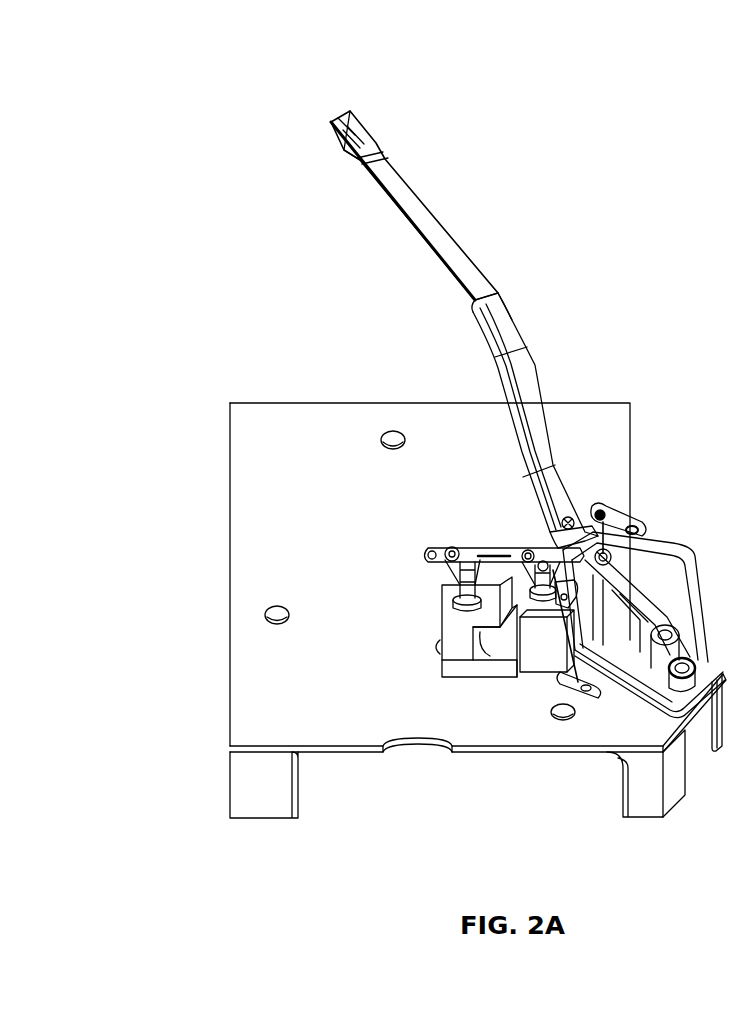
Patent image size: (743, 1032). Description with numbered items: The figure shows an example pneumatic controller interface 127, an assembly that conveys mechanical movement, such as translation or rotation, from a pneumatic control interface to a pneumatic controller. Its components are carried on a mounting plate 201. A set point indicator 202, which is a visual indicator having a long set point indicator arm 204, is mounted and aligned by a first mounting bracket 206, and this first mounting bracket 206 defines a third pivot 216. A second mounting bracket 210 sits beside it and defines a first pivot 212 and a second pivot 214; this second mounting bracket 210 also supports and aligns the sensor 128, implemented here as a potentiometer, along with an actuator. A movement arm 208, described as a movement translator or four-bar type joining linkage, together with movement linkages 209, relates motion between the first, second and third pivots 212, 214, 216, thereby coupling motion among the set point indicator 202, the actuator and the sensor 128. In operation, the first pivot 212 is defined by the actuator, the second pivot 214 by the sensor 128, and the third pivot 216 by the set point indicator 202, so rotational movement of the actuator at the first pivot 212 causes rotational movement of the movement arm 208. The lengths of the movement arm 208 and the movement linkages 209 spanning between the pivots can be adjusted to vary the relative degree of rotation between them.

The pneumatic controller interface 127 is at (266, 48).
The sensor 128 is at (440, 652).
The mounting plate 201 is at (252, 568).
The set point indicator 202 is at (408, 200).
The set point indicator arm 204 is at (523, 391).
The first mounting bracket 206 is at (662, 553).
The movement arm 208 is at (504, 553).
The movement linkages 209 is at (440, 578).
The second mounting bracket 210 is at (528, 645).
The first pivot 212 is at (557, 680).
The second pivot 214 is at (445, 603).
The third pivot 216 is at (606, 556).